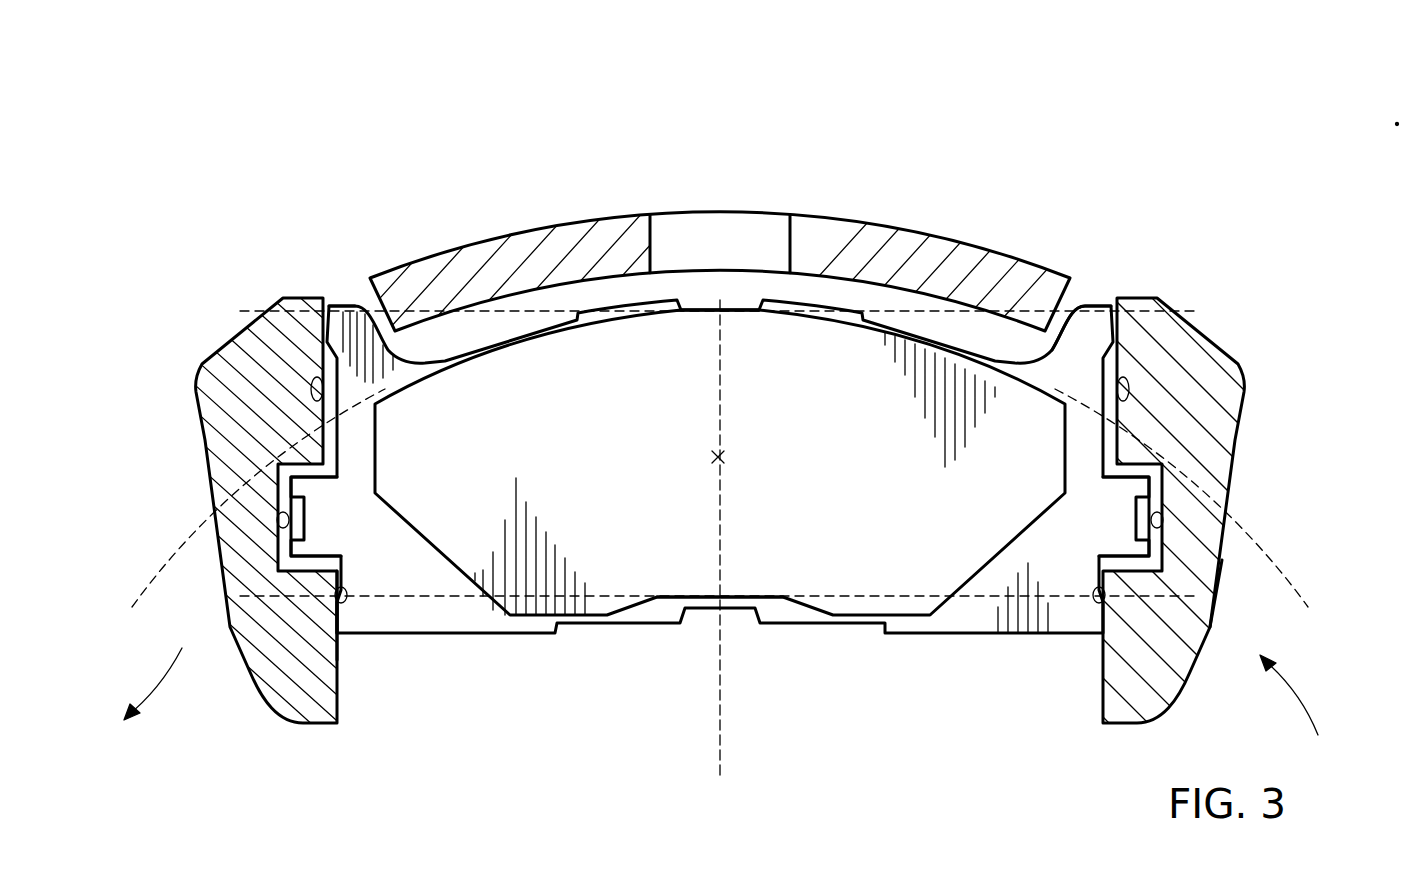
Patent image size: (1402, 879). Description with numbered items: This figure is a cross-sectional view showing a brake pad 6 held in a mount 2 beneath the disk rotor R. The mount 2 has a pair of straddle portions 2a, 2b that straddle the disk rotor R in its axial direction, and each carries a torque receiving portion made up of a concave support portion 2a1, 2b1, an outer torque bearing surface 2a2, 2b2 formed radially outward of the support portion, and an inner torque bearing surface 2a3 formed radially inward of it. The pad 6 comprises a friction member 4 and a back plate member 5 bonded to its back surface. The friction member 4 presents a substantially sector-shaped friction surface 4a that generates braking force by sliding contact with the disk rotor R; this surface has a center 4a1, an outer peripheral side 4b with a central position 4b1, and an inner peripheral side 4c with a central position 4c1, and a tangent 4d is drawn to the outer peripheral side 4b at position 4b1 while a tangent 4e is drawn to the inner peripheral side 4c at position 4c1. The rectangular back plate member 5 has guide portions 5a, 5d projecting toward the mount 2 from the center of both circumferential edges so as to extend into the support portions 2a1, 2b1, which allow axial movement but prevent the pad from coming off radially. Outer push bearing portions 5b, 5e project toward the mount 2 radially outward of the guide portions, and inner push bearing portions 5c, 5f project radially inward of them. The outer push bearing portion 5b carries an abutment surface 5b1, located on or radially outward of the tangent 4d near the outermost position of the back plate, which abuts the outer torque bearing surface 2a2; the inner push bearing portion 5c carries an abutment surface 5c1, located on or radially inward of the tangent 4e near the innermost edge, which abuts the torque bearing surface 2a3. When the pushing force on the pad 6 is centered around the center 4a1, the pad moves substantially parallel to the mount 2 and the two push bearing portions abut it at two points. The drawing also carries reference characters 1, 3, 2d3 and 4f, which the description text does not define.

The disc brake 1 is at (735, 181).
The mount 2 is at (275, 303).
The straddle portion 2a is at (235, 425).
The support portion 2a1 is at (276, 517).
The outer torque bearing surface 2a2 is at (312, 388).
The inner torque bearing surface 2a3 is at (333, 607).
The straddle portion 2b is at (1217, 412).
The support portion 2b1 is at (1164, 517).
The outer torque bearing surface 2b2 is at (1128, 390).
The outer side surface 2d3 is at (1208, 613).
The rotor 3 is at (905, 245).
The friction member 4 is at (707, 357).
The friction surface 4a is at (525, 385).
The center of the friction surface 4a1 is at (714, 453).
The outer peripheral side 4b is at (925, 340).
The central position of the outer peripheral side 4b1 is at (722, 298).
The inner peripheral side 4c is at (830, 626).
The central position of the inner peripheral side 4c1 is at (722, 600).
The tangent to the outer peripheral side 4d is at (392, 325).
The tangent to the inner peripheral side 4e is at (440, 597).
The center line 4f is at (721, 712).
The back plate member 5 is at (668, 302).
The guide portion 5a is at (313, 520).
The outer push bearing portion 5b is at (333, 308).
The abutment surface 5b1 is at (405, 358).
The inner push bearing portion 5c is at (343, 617).
The abutment surface 5c1 is at (337, 613).
The guide portion 5d is at (1100, 522).
The outer push bearing portion 5e is at (1093, 332).
The inner push bearing portion 5f is at (1093, 622).
The pad 6 is at (642, 113).
The disk rotor R is at (1268, 581).